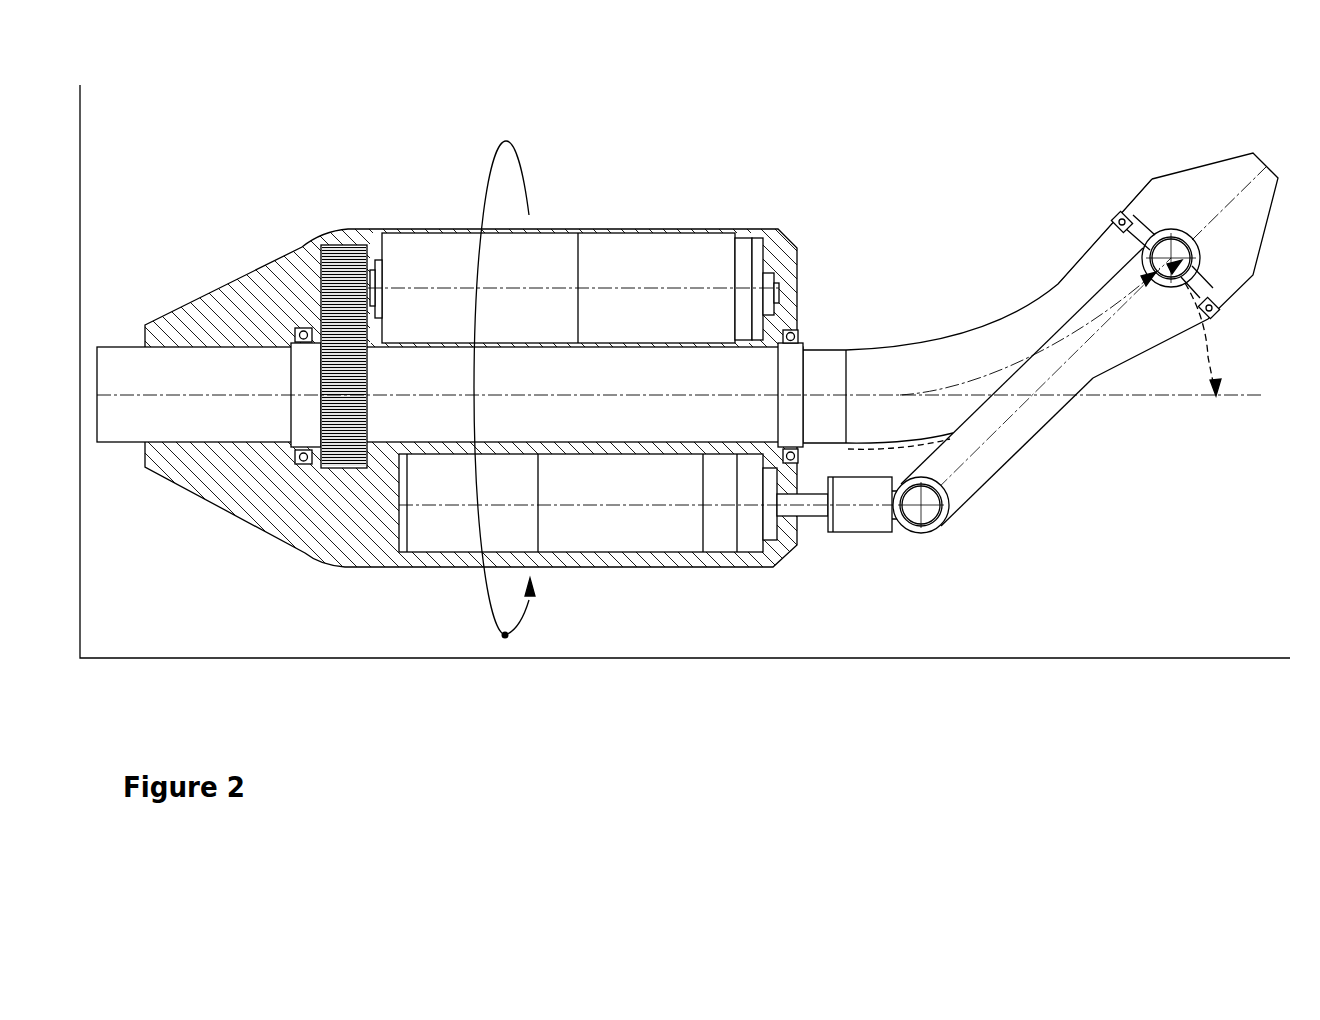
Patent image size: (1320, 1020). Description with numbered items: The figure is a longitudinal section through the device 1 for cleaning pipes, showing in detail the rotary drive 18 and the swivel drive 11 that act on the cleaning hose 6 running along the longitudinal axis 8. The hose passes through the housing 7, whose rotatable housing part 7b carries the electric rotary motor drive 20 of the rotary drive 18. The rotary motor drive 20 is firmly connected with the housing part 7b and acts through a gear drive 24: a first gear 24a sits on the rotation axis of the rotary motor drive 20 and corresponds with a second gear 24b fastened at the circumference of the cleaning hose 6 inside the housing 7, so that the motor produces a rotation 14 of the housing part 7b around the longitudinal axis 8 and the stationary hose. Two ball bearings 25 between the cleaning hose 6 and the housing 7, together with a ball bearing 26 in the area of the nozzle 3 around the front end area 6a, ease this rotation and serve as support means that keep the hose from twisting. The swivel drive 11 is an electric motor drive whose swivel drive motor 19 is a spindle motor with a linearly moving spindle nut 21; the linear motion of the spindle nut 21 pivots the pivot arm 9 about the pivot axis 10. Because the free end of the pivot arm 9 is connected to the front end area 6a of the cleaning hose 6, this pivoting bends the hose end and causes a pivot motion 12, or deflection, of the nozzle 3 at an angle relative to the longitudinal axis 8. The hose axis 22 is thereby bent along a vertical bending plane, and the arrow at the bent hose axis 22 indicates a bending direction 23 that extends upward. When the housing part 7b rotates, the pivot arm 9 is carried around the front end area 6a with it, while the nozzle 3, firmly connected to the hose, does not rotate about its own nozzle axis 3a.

The device for cleaning pipes 1 is at (628, 207).
The nozzle 3 is at (1185, 230).
The nozzle axis 3a is at (1235, 192).
The cleaning hose 6 is at (190, 365).
The front end area of the cleaning hose 6a is at (1012, 338).
The housing 7 is at (471, 467).
The rotatable housing part 7b is at (368, 512).
The longitudinal axis 8 is at (1240, 396).
The pivot arm 9 is at (1017, 418).
The pivot axis 10 is at (894, 591).
The swivel drive 11 is at (785, 515).
The pivot motion 12 is at (1208, 356).
The rotation 14 is at (505, 635).
The rotary drive 18 is at (279, 391).
The swivel drive motor 19 is at (668, 532).
The rotary motor drive 20 is at (410, 268).
The spindle nut 21 is at (852, 518).
The hose axis 22 is at (1067, 335).
The bending direction 23 is at (1117, 224).
The gear drive 24 is at (237, 394).
The first gear 24a is at (338, 274).
The second gear 24b is at (348, 437).
The ball bearings 25 is at (792, 330).
The ball bearing 26 is at (1123, 219).